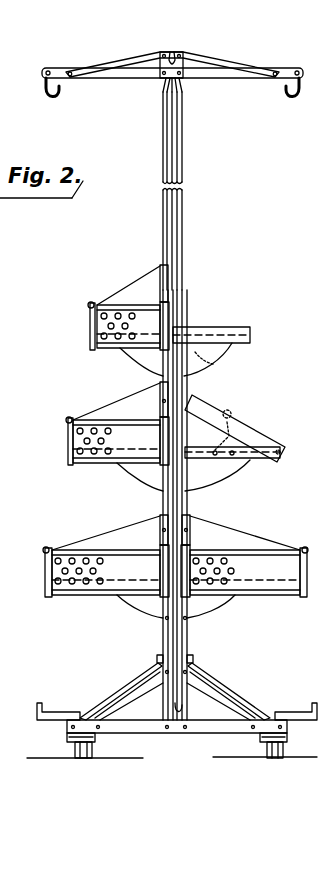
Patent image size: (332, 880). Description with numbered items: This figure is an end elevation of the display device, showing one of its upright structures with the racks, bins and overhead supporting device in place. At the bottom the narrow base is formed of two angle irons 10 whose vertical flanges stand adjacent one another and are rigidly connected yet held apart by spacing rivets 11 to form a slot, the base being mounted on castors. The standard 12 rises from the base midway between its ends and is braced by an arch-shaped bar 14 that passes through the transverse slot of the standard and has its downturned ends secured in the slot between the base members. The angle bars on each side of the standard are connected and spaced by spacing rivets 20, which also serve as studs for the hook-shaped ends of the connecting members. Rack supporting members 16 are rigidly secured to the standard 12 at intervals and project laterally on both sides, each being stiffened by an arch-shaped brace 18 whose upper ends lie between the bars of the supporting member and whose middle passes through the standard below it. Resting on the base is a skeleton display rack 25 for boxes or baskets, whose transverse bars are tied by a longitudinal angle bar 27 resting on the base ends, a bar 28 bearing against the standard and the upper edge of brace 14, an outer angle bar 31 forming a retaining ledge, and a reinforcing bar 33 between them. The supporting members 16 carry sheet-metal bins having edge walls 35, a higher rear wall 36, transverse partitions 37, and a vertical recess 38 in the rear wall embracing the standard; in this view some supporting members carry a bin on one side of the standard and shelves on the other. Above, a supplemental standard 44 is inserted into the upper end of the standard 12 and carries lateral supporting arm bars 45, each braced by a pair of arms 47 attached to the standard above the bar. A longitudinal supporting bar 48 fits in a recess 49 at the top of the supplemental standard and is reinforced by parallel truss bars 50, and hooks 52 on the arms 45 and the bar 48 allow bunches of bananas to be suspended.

The angle irons 10 is at (152, 728).
The spacing rivets 11 is at (287, 735).
The standard 12 is at (188, 300).
The brace bar 14 is at (175, 691).
The rack supporting members 16 is at (252, 458).
The arch shaped brace 18 is at (217, 360).
The spacing rivets 20 is at (177, 342).
The display rack 25 is at (165, 690).
The longitudinal bar 27 is at (67, 722).
The longitudinal bar 28 is at (157, 660).
The longitudinal bar 31 is at (37, 703).
The longitudinal bar 33 is at (113, 690).
The edge walls 35 is at (92, 328).
The rear wall 36 is at (162, 402).
The transverse partitions 37 is at (130, 291).
The vertical recess 38 is at (162, 282).
The supplemental standards 44 is at (183, 160).
The supporting arm bars 45 is at (122, 78).
The brace arms 47 is at (123, 58).
The longitudinal supporting bar 48 is at (180, 82).
The recess 49 is at (160, 85).
The truss bars 50 is at (172, 52).
The hooks 52 is at (292, 96).